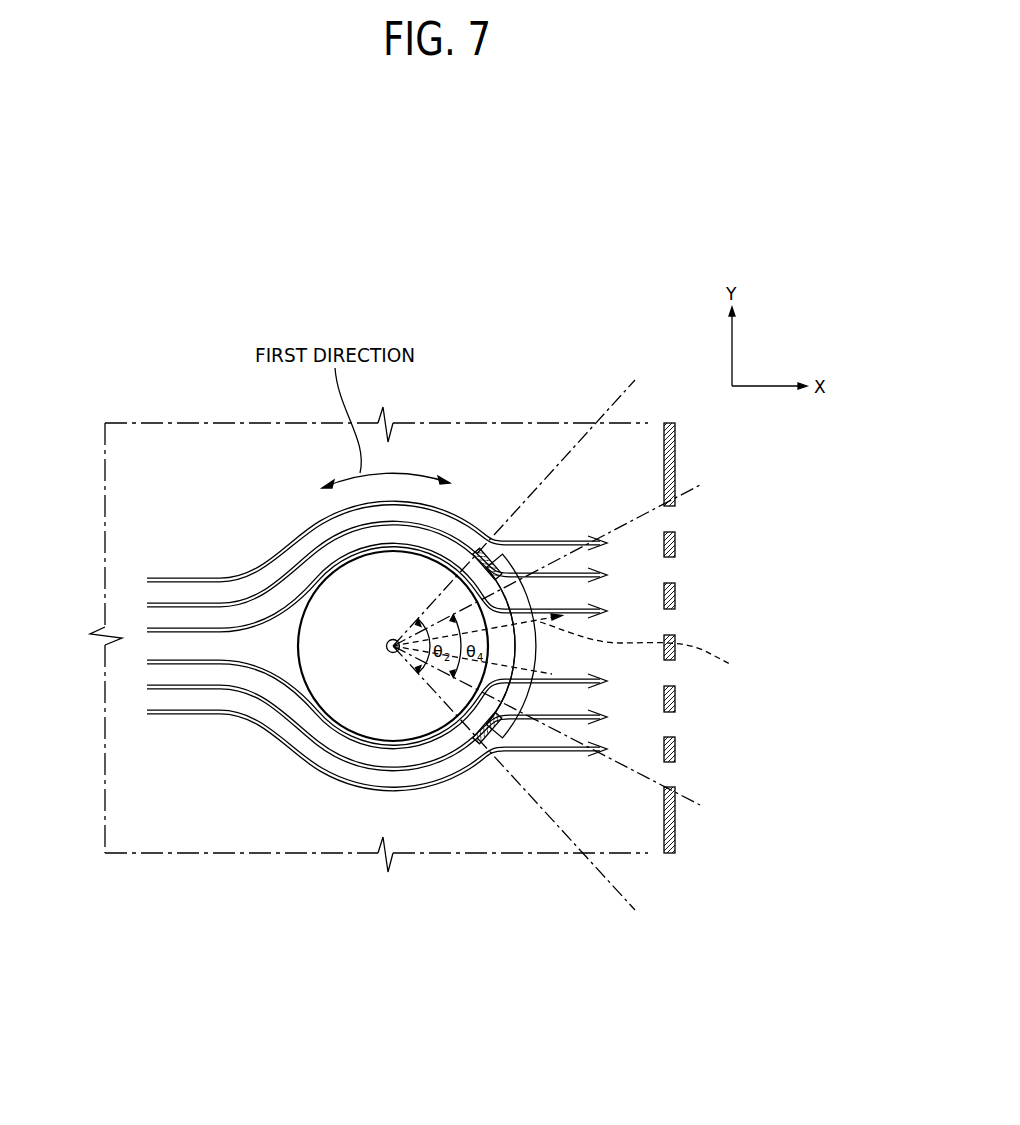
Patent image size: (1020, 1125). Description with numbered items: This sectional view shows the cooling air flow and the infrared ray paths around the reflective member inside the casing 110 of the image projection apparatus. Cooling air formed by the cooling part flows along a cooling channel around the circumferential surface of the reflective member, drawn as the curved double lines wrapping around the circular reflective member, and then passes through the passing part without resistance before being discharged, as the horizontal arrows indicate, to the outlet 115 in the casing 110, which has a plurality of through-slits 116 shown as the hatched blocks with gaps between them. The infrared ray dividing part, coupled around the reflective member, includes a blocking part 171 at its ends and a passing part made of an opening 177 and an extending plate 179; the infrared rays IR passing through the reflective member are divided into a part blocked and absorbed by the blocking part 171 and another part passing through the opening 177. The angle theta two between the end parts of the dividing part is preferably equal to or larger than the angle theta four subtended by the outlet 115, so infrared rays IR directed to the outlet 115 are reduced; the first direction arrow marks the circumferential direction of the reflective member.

The casing 110 is at (672, 452).
The outlet 115 is at (685, 522).
The through-slits 116 is at (672, 565).
The blocking part 171 is at (484, 736).
The opening 177 is at (522, 718).
The extending plate 179 is at (537, 663).
The infrared rays IR is at (644, 648).